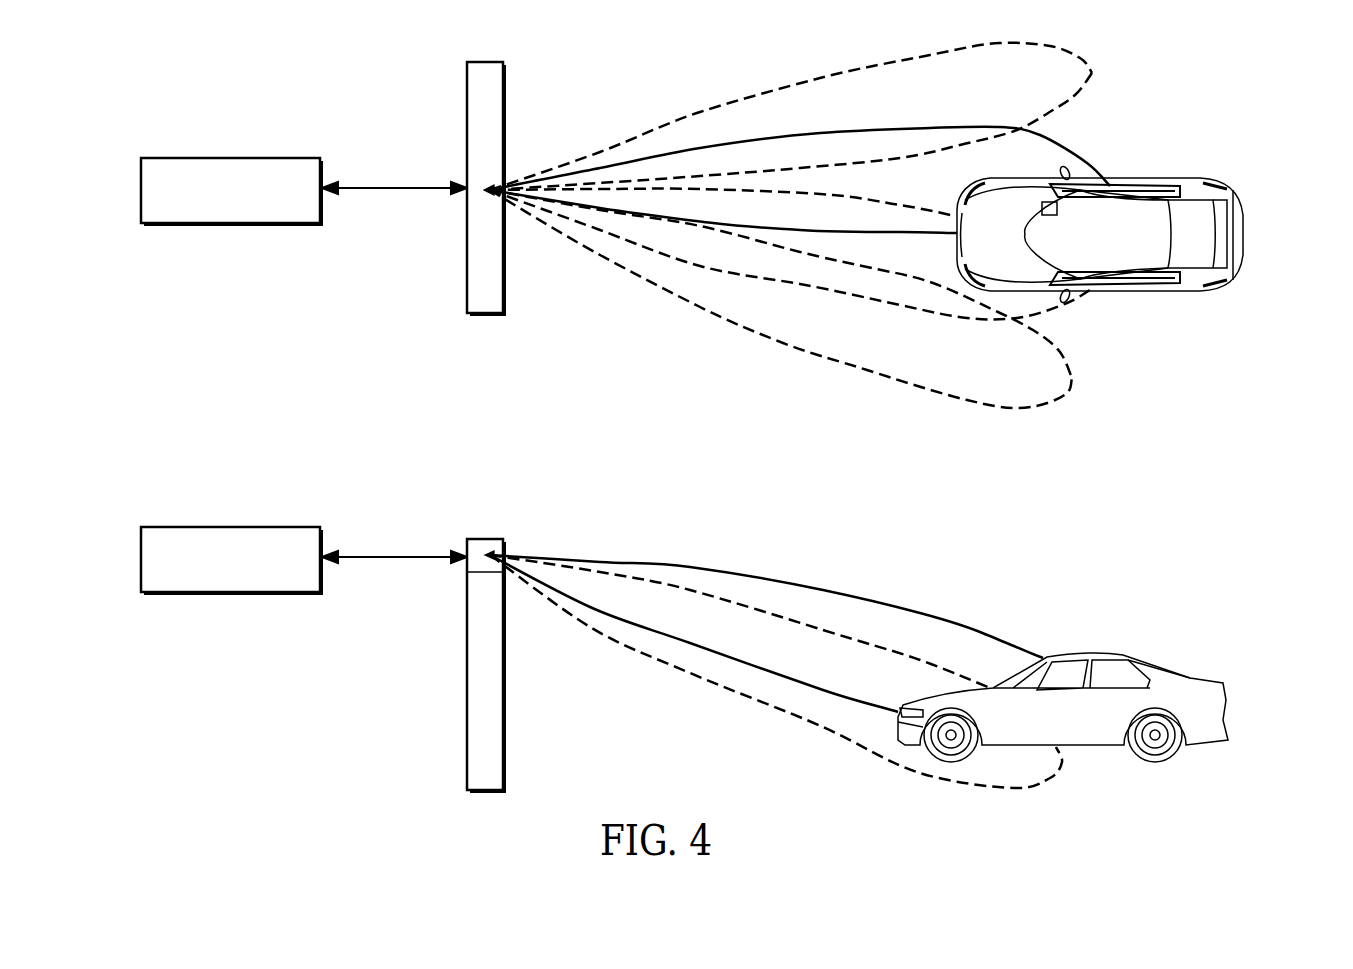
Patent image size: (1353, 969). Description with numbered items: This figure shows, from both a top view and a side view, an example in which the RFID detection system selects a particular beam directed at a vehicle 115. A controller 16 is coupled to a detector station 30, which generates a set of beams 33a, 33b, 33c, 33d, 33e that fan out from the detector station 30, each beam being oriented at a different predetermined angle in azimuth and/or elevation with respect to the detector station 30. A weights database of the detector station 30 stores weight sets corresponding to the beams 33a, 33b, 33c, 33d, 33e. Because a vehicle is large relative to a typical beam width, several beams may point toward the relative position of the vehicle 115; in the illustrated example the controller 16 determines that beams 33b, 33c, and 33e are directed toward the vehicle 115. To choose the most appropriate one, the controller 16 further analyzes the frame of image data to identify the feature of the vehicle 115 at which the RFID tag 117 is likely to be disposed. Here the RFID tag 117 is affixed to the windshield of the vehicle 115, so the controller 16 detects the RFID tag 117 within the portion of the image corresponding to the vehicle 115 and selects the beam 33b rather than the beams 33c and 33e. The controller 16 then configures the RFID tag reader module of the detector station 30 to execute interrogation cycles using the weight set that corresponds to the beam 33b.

The controller 16 is at (141, 190).
The detector station 30 is at (467, 67).
The beam 33a is at (782, 86).
The beam 33b is at (720, 145).
The beam 33c is at (745, 281).
The beam 33d is at (790, 346).
The beam 33e is at (877, 757).
The vehicle 115 is at (1243, 237).
The RFID tag 117 is at (1058, 208).